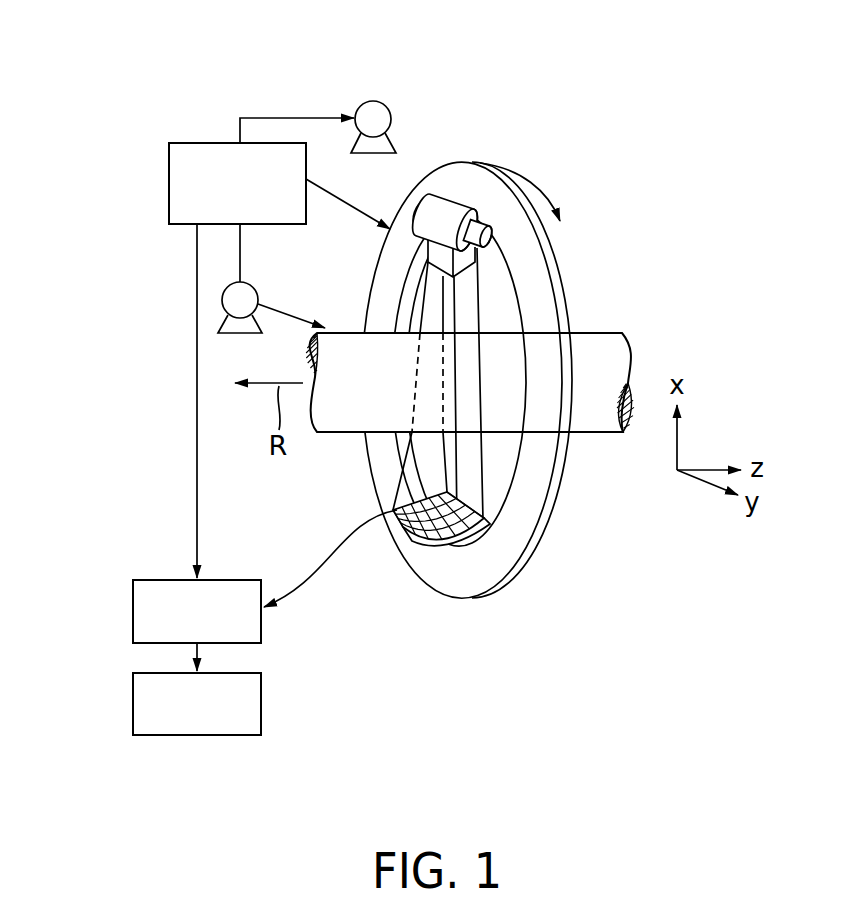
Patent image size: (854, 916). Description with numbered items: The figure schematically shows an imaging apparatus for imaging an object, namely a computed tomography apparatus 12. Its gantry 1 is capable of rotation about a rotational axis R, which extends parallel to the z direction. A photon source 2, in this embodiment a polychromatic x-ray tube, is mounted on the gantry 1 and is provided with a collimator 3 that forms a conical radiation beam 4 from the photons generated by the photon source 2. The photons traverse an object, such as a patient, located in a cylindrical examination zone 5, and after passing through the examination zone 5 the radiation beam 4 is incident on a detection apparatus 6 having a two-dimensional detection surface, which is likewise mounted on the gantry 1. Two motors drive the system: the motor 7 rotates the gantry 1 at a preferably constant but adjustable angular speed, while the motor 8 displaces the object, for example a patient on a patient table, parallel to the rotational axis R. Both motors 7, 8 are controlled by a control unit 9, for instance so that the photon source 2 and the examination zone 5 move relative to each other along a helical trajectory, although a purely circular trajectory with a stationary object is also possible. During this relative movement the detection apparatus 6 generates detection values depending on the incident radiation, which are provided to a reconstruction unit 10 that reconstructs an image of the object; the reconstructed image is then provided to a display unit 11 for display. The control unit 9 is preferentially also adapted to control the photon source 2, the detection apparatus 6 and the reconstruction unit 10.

The gantry 1 is at (521, 529).
The photon source 2 is at (442, 207).
The collimator 3 is at (468, 262).
The radiation beam 4 is at (457, 480).
The examination zone 5 is at (347, 333).
The detection apparatus 6 is at (427, 543).
The motor 7 is at (384, 101).
The motor 8 is at (258, 292).
The control unit 9 is at (183, 143).
The reconstruction unit 10 is at (133, 608).
The display unit 11 is at (133, 700).
The computed tomography apparatus 12 is at (588, 103).